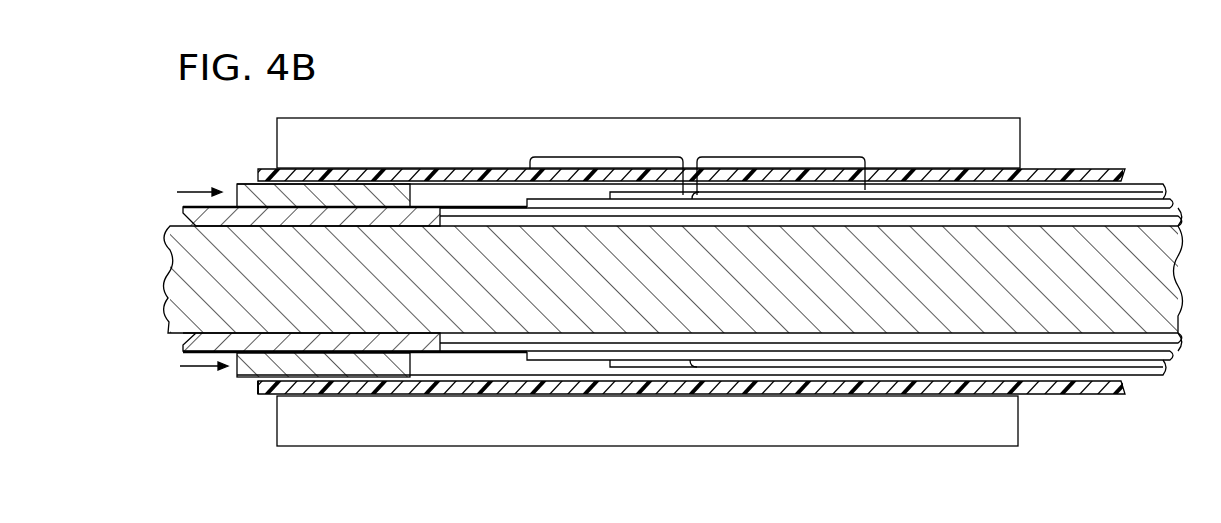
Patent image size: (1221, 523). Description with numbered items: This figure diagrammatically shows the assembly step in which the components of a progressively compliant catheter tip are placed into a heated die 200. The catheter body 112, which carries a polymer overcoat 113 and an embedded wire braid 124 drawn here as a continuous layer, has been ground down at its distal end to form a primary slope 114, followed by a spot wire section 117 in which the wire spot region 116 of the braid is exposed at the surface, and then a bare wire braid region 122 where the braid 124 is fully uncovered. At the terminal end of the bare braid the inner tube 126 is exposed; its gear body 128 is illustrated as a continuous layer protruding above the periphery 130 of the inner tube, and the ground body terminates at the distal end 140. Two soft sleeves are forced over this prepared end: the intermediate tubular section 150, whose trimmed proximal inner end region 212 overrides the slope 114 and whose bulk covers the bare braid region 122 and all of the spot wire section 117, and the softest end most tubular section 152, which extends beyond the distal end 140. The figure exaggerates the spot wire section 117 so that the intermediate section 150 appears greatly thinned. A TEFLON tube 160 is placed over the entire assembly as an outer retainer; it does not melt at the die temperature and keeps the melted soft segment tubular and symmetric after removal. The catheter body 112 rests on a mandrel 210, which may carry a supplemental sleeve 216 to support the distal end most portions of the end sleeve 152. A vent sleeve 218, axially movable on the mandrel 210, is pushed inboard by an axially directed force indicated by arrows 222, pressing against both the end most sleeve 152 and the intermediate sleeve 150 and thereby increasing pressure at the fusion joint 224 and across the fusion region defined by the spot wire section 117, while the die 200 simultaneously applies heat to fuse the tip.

The catheter body 112 is at (1152, 390).
The polymer overcoat 113 is at (1133, 385).
The primary slope 114 is at (857, 188).
The wire spot region 116 is at (787, 370).
The spot wire section 117 is at (783, 158).
The bare wire braid region 122 is at (615, 158).
The wire braid 124 is at (550, 198).
The inner tube 126 is at (453, 203).
The gear body 128 is at (525, 197).
The intermediate region 130 is at (500, 213).
The distal end 140 is at (437, 205).
The intermediate tubular section 150 is at (783, 188).
The end most tubular section 152 is at (448, 395).
The TEFLON tube 160 is at (262, 386).
The die 200 is at (797, 117).
The mandrel 210 is at (168, 240).
The proximal inner end region 212 is at (852, 190).
The supplemental sleeve 216 is at (178, 350).
The vent sleeve 218 is at (246, 379).
The arrows 222 is at (193, 192).
The fusion joint 224 is at (607, 365).